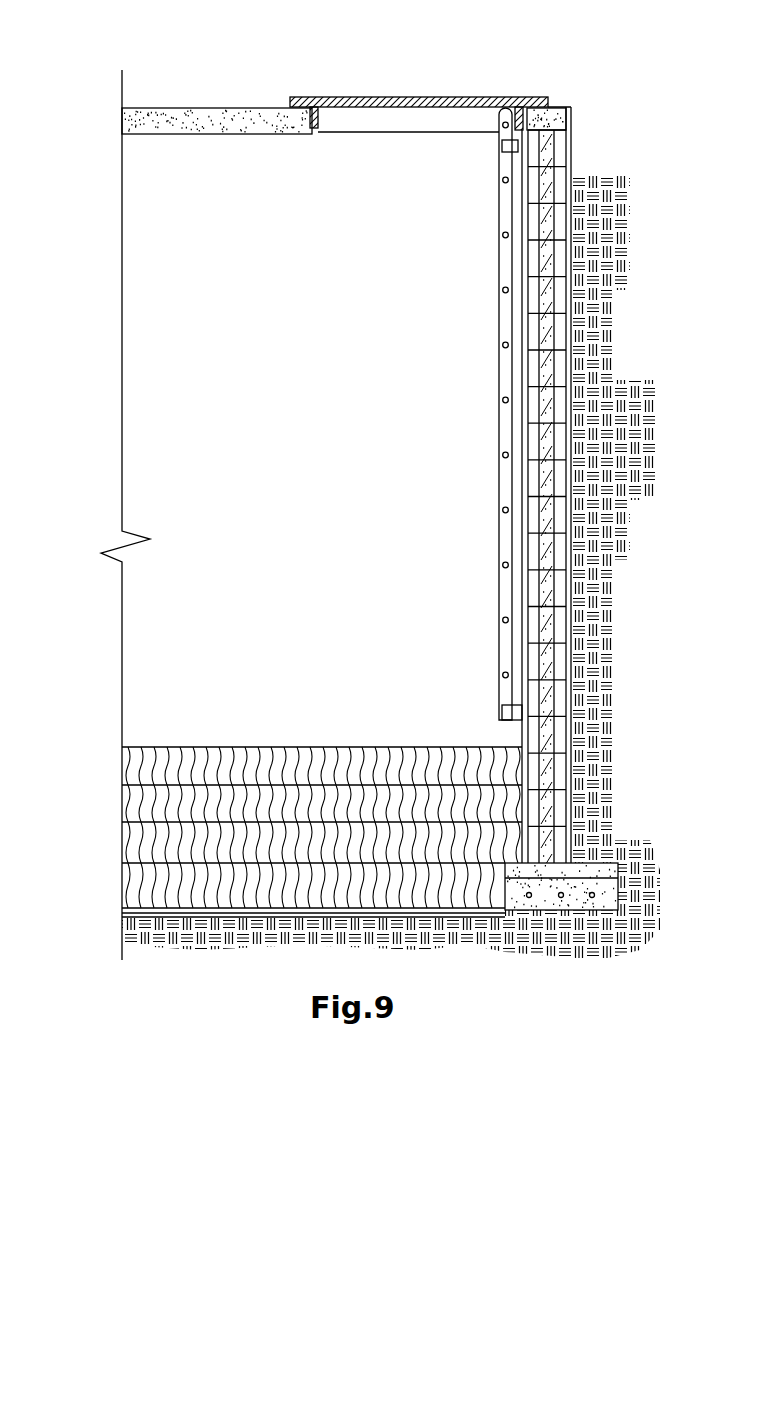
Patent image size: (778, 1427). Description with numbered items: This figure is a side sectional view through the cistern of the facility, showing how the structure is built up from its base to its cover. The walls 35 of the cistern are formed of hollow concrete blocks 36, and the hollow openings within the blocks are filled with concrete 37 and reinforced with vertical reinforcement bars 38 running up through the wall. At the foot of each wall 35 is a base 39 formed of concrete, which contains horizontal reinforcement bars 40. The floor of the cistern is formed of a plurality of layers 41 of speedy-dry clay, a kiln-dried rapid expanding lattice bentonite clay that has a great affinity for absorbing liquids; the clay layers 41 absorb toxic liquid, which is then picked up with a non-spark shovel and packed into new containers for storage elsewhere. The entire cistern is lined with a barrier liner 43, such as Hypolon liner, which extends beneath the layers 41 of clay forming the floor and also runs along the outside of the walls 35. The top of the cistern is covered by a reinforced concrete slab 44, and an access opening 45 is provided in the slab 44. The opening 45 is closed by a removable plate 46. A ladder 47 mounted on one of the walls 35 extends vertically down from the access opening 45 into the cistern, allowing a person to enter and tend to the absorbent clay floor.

The walls 35 is at (552, 487).
The hollow concrete blocks 36 is at (540, 600).
The concrete 37 is at (553, 692).
The vertical reinforcement bars 38 is at (545, 727).
The base 39 is at (612, 882).
The horizontal reinforcement bars 40 is at (592, 898).
The layers of speedy-dry clay 41 is at (137, 888).
The barrier liner 43 is at (572, 375).
The reinforced concrete slab 44 is at (222, 122).
The access opening 45 is at (393, 132).
The removable plate 46 is at (468, 102).
The ladder 47 is at (500, 370).